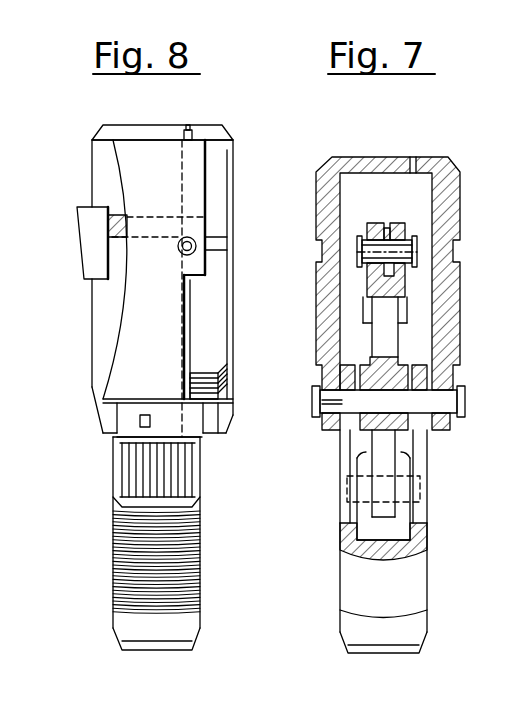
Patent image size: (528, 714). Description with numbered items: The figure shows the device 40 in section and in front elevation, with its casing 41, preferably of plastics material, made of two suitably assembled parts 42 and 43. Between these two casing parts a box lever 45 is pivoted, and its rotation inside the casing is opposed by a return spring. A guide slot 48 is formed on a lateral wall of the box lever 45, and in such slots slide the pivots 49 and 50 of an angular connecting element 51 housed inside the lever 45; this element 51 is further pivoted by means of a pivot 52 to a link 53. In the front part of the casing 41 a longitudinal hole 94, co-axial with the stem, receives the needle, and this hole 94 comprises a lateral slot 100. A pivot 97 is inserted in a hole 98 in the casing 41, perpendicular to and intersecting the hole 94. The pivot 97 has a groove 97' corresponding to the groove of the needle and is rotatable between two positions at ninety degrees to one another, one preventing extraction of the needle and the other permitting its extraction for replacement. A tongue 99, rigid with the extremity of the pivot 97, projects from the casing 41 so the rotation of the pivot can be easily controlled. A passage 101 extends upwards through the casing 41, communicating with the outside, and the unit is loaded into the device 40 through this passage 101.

In FIG. 8, the device 40 is at (86, 173).
In FIG. 8, the casing 41 is at (264, 121).
In FIG. 7, the casing 41 is at (455, 158).
In FIG. 7, the casing part 42 is at (454, 220).
In FIG. 7, the casing part 43 is at (332, 204).
In FIG. 8, the box lever 45 is at (126, 567).
In FIG. 7, the box lever 45 is at (349, 573).
In FIG. 7, the guide slot 48 is at (346, 447).
In FIG. 7, the pivot 49 is at (416, 490).
In FIG. 7, the pivot 50 is at (330, 401).
In FIG. 7, the angular connecting element 51 is at (388, 308).
In FIG. 7, the pivot 52 is at (402, 250).
In FIG. 7, the link 53 is at (389, 226).
In FIG. 8, the longitudinal hole 94 is at (198, 258).
In FIG. 8, the pivot 97 is at (129, 269).
In FIG. 8, the groove 97' is at (234, 201).
In FIG. 8, the hole 98 is at (159, 288).
In FIG. 8, the tongue 99 is at (86, 237).
In FIG. 8, the lateral slot 100 is at (193, 246).
In FIG. 8, the passage 101 is at (189, 126).